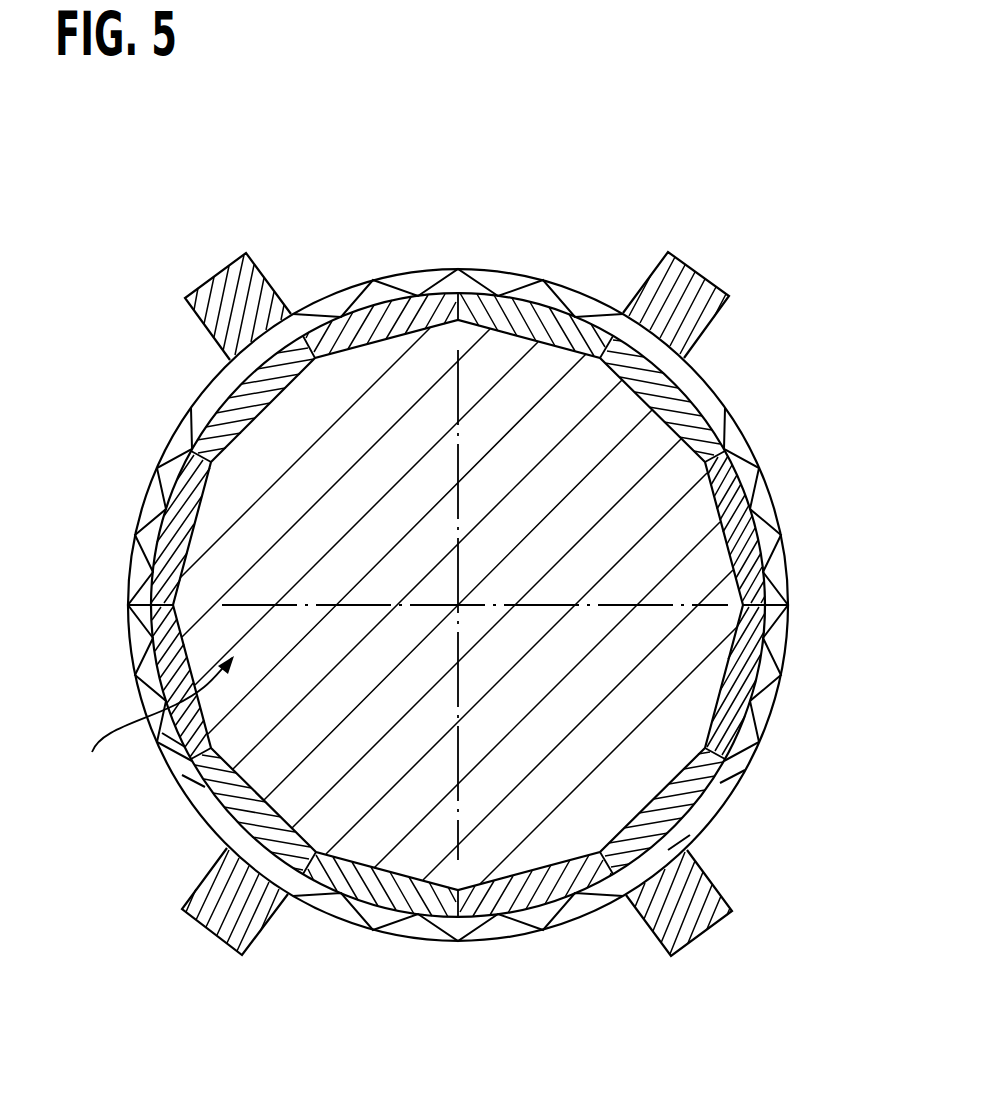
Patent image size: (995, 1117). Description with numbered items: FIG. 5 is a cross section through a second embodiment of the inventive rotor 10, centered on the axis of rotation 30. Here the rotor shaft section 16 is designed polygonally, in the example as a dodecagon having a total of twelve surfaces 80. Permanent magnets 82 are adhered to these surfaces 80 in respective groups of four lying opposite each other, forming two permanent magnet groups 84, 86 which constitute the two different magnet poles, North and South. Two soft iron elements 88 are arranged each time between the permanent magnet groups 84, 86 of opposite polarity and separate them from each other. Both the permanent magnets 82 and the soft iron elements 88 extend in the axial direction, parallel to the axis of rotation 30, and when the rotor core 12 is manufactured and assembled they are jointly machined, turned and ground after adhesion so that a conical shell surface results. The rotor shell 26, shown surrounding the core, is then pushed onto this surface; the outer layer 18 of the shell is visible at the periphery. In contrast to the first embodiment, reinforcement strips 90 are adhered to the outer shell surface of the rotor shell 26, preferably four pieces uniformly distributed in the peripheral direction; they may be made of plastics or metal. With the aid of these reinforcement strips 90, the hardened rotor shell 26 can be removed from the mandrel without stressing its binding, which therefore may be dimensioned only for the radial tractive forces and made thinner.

The rotor 10 is at (652, 220).
The rotor core 12 is at (110, 757).
The rotor shaft section 16 is at (277, 757).
The outer sleeve 18 is at (716, 800).
The rotor shell 26 is at (722, 398).
The axis of rotation 30 is at (458, 607).
The surfaces 80 is at (722, 513).
The permanent magnets 82 is at (237, 407).
The permanent magnet group 84 is at (617, 330).
The permanent magnet group 86 is at (600, 900).
The soft iron elements 88 is at (750, 652).
The reinforcement strips 90 is at (228, 268).